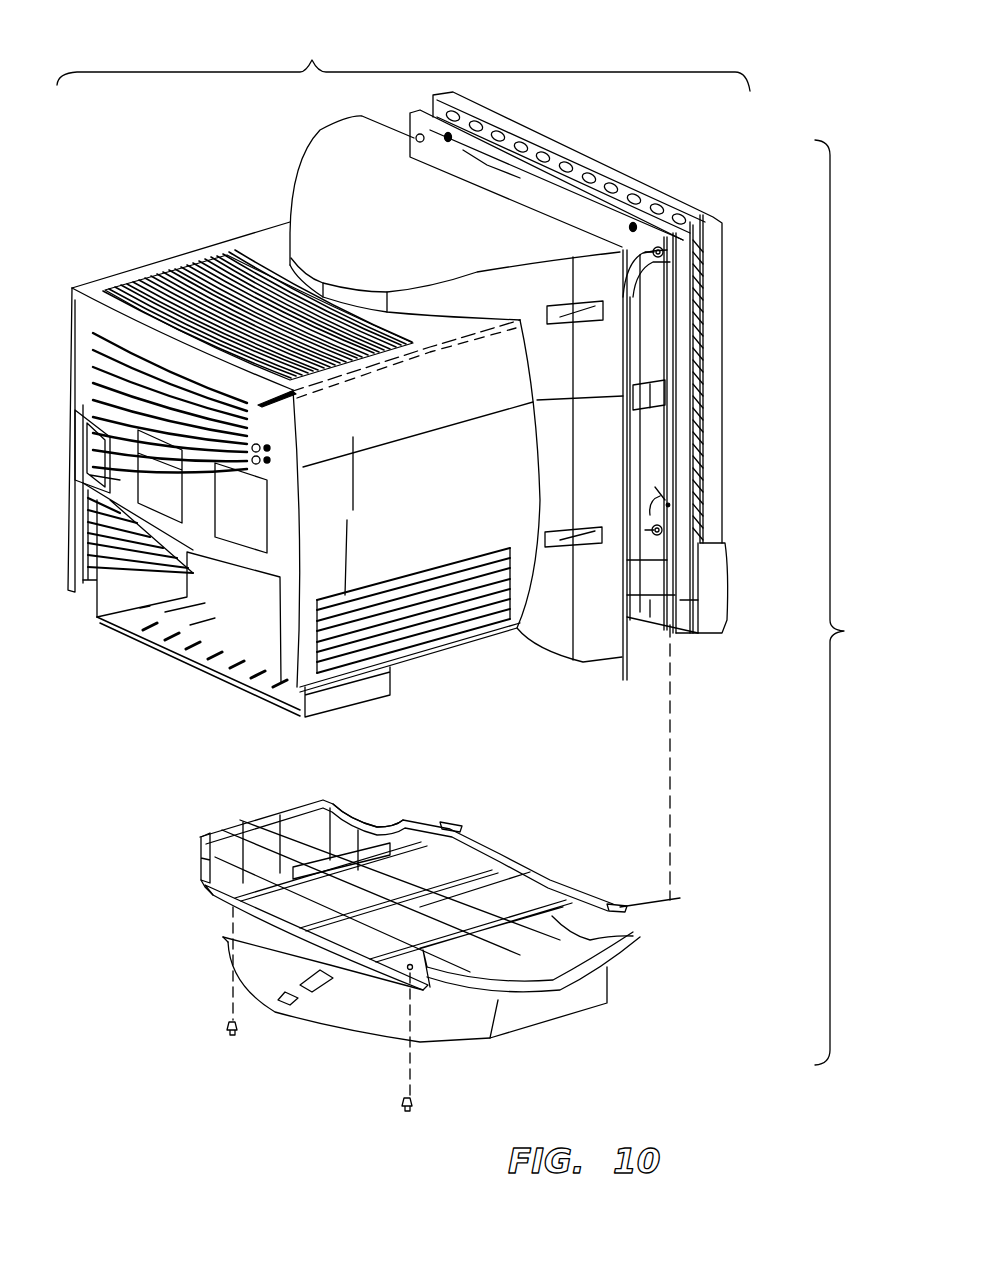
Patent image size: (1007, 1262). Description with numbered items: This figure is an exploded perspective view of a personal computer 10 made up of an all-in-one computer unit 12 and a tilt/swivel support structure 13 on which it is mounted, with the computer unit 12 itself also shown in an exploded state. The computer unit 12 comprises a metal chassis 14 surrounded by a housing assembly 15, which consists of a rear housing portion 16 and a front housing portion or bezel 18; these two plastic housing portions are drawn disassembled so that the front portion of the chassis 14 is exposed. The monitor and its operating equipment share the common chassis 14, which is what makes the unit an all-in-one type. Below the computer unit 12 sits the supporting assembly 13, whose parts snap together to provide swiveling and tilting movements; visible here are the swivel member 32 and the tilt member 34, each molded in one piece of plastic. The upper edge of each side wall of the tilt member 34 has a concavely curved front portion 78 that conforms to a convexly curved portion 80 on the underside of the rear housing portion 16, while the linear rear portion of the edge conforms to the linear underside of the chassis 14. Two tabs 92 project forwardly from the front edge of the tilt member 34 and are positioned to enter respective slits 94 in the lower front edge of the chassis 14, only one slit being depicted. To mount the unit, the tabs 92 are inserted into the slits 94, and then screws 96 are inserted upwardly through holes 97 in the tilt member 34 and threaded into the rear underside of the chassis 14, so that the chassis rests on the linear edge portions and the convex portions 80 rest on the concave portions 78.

The personal computer 10 is at (852, 602).
The computer unit 12 is at (403, 58).
The tilt/swivel support structure 13 is at (540, 1047).
The metal chassis 14 is at (665, 456).
The housing assembly 15 is at (237, 237).
The rear housing portion 16 is at (443, 620).
The front housing portion or bezel 18 is at (725, 343).
The swivel member 32 is at (350, 1020).
The tilt member 34 is at (200, 875).
The front portion of upper edge 78 is at (357, 803).
The convexly curved portion 80 is at (548, 648).
The tabs 92 is at (450, 827).
The slits 94 is at (656, 615).
The screws 96 is at (224, 1031).
The holes 97 is at (213, 887).